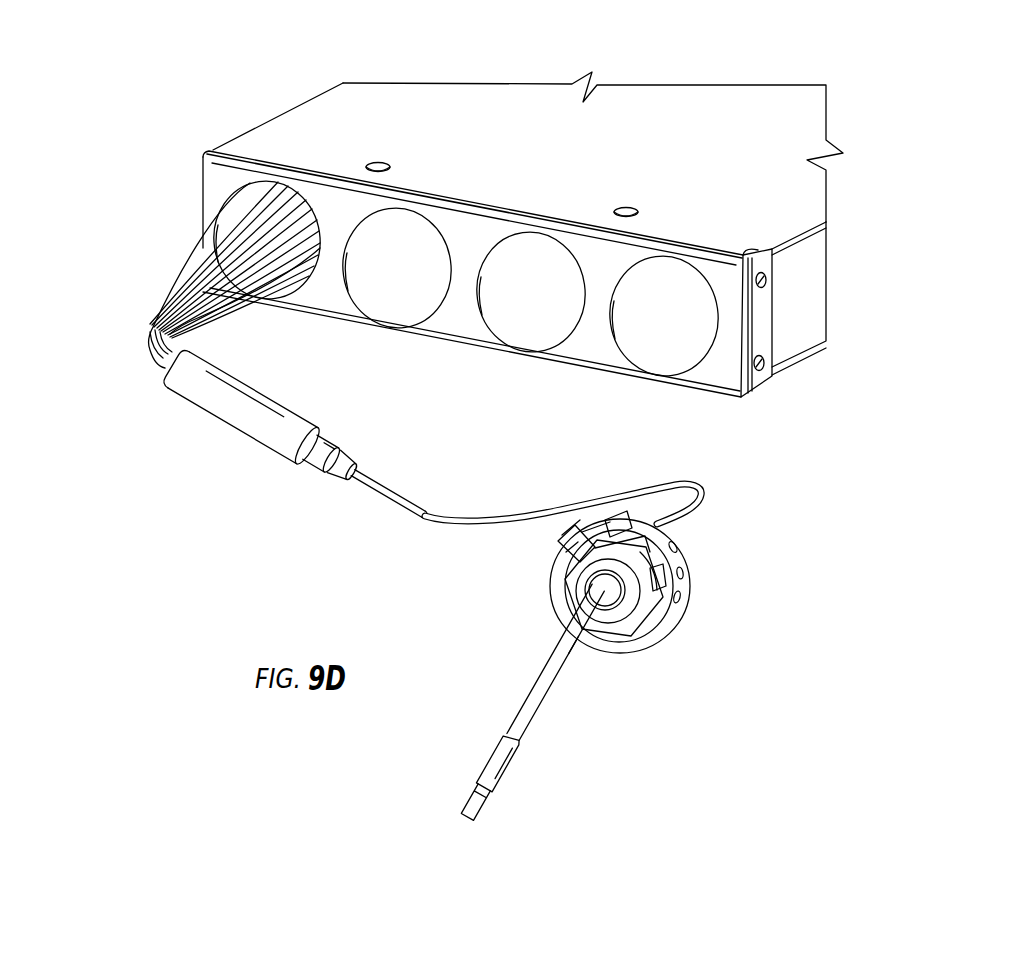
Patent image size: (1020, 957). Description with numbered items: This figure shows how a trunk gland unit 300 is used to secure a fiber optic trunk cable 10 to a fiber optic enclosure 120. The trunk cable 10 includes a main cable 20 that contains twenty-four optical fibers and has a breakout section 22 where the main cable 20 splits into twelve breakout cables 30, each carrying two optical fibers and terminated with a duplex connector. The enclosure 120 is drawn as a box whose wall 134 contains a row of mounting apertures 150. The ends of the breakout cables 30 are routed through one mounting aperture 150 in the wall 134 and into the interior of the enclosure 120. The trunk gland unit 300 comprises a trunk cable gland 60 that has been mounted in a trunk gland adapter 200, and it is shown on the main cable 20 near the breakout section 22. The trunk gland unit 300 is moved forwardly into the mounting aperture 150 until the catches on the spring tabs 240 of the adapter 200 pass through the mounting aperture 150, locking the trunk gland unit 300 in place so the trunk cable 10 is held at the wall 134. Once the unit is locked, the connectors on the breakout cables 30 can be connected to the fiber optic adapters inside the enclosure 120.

The fiber optic trunk cable 10 is at (133, 195).
The main cable 20 is at (563, 490).
The breakout section 22 is at (299, 441).
The breakout cable 30 is at (218, 275).
The trunk cable gland 60 is at (533, 702).
The fiber optic enclosure 120 is at (493, 238).
The wall 134 is at (745, 351).
The mounting aperture 150 is at (235, 227).
The trunk gland adapter 200 is at (651, 600).
The spring tab 240 is at (712, 565).
The trunk gland unit 300 is at (672, 578).